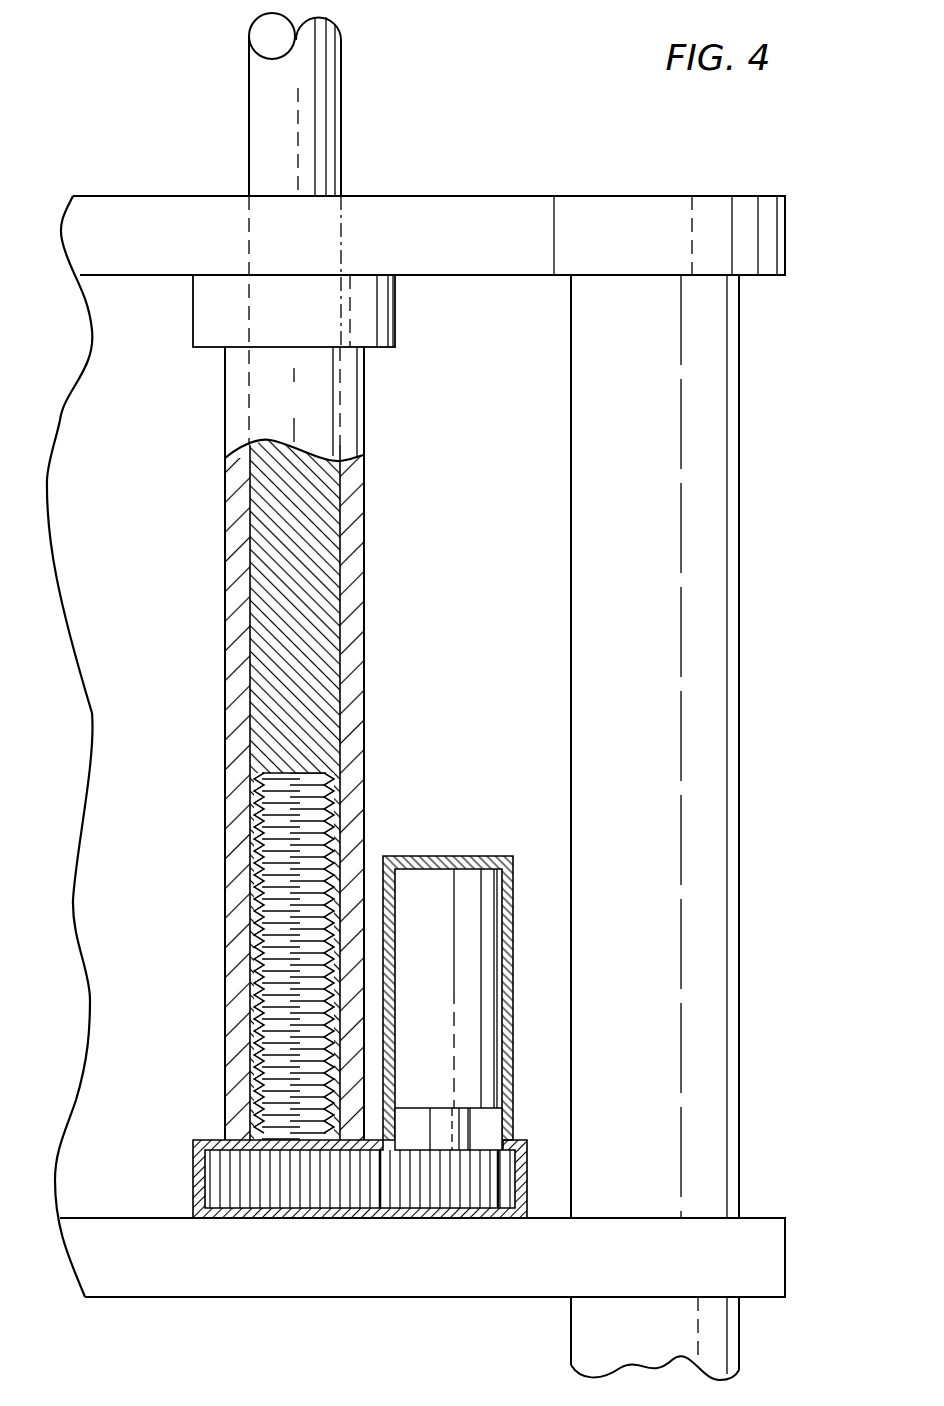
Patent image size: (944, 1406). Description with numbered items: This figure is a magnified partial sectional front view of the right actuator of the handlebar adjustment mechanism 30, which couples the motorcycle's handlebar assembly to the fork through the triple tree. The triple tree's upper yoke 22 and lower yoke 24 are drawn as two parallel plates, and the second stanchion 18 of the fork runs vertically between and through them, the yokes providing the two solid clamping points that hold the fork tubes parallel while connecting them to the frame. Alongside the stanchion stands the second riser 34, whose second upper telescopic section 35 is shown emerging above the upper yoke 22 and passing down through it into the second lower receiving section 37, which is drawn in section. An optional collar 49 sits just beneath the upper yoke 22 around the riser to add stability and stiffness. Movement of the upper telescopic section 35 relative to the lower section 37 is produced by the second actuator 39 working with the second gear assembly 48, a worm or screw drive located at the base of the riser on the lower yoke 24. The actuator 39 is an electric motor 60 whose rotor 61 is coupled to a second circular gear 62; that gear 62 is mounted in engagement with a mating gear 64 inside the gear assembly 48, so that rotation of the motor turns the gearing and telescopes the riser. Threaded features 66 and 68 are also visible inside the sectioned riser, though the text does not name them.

The second stanchion 18 is at (740, 737).
The upper yoke 22 is at (456, 222).
The lower yoke 24 is at (762, 1265).
The handlebar adjustment mechanism 30 is at (504, 480).
The second riser 34 is at (218, 692).
The second upper telescopic section 35 is at (249, 143).
The second lower receiving section 37 is at (225, 560).
The second actuator 39 is at (448, 848).
The second gear assembly 48 is at (186, 1170).
The collar 49 is at (382, 316).
The electric motor 60 is at (413, 1022).
The rotor 61 is at (460, 1133).
The second circular gear 62 is at (490, 1185).
The mating gear 64 is at (235, 1190).
The threaded bore 66 is at (265, 1030).
The threads 68 is at (264, 793).